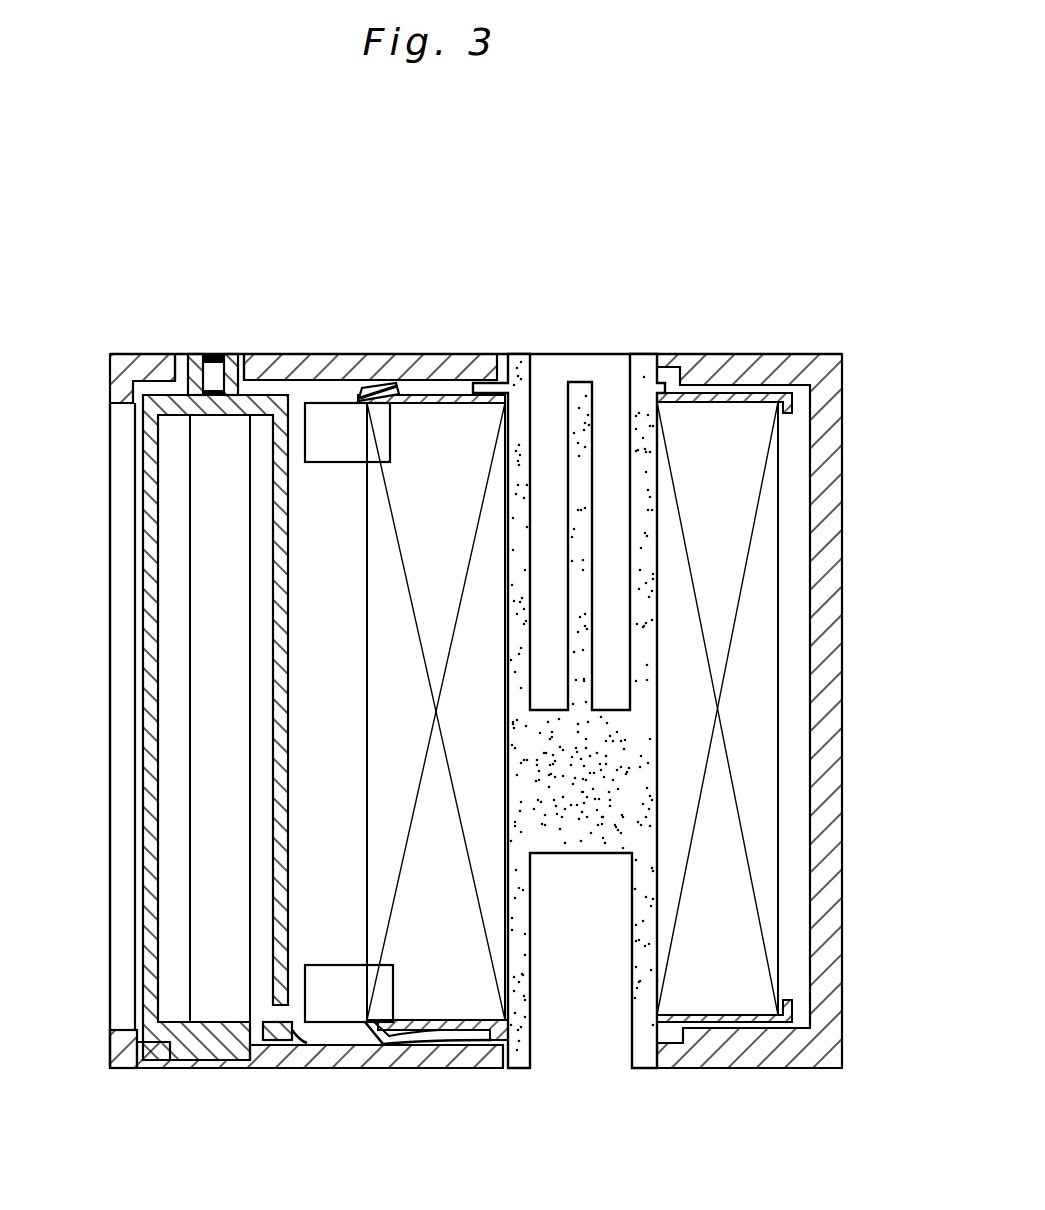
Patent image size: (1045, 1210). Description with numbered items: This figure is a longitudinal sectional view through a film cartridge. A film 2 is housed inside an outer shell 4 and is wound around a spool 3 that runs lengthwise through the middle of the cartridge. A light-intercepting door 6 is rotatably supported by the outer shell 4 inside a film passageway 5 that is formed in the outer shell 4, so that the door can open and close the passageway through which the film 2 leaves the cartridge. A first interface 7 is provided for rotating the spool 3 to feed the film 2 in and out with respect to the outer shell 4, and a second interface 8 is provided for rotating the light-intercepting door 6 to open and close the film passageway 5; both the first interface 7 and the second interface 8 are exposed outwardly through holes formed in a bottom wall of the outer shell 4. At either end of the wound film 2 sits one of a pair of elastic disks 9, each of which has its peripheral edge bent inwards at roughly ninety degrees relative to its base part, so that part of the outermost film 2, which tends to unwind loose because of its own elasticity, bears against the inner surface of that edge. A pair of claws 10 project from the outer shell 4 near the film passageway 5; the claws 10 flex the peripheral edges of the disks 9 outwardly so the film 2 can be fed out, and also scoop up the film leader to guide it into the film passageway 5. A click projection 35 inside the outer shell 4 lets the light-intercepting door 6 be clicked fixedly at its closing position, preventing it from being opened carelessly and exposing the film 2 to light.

The film 2 is at (476, 1010).
The spool 3 is at (641, 1032).
The outer shell 4 is at (843, 515).
The film passageway 5 is at (135, 1018).
The light-intercepting door 6 is at (142, 786).
The first interface 7 is at (594, 338).
The second interface 8 is at (225, 343).
The disk 9 is at (386, 392).
The claw 10 is at (322, 423).
The click projection 35 is at (353, 1044).